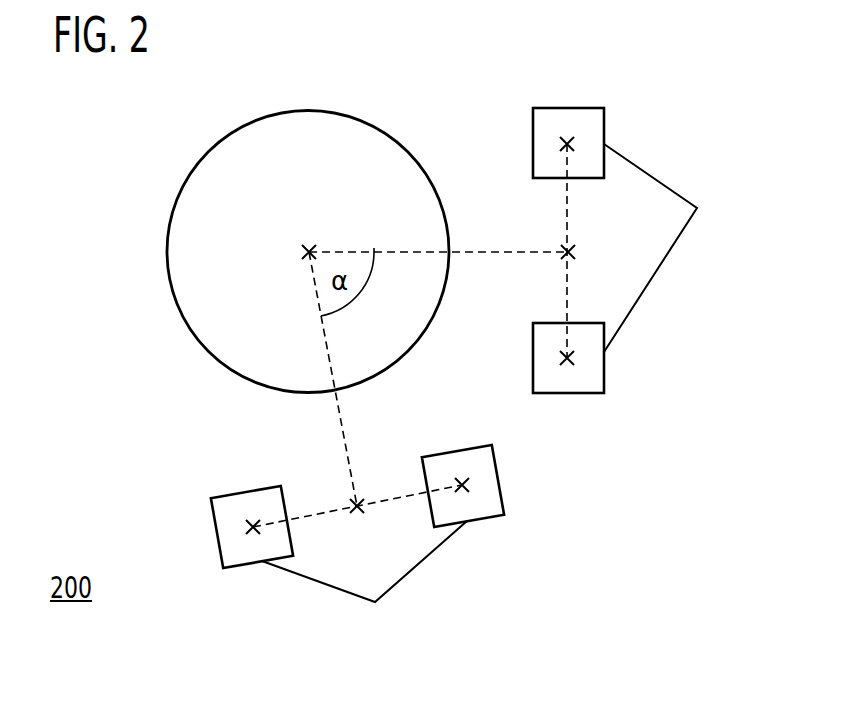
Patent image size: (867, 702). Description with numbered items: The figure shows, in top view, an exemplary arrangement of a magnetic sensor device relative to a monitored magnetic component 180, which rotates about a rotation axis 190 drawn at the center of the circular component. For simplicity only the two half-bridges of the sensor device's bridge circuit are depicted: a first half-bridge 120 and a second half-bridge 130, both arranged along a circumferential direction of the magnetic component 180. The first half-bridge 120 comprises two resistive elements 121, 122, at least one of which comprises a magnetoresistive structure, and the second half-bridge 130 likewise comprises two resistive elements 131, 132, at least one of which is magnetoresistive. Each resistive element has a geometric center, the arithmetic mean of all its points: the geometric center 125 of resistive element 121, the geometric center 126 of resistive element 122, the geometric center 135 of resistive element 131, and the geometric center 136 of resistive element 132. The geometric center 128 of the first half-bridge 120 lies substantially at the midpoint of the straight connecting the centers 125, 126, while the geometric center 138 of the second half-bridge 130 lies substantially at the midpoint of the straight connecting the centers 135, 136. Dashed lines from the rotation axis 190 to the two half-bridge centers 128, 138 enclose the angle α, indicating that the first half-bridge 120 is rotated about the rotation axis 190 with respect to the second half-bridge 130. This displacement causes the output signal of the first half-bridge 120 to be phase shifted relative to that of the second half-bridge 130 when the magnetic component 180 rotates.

The first half-bridge 120 is at (677, 155).
The resistive element 121 is at (567, 108).
The resistive element 122 is at (567, 393).
The geometric center of resistive element 121 125 is at (557, 140).
The geometric center of resistive element 122 126 is at (557, 353).
The geometric center of the first half-bridge 128 is at (577, 251).
The second half-bridge 130 is at (420, 563).
The resistive element 131 is at (498, 478).
The resistive element 132 is at (211, 531).
The geometric center of resistive element 131 135 is at (461, 478).
The geometric center of resistive element 132 136 is at (252, 520).
The geometric center of the second half-bridge 138 is at (357, 516).
The magnetic component 180 is at (167, 250).
The rotation axis 190 is at (300, 252).